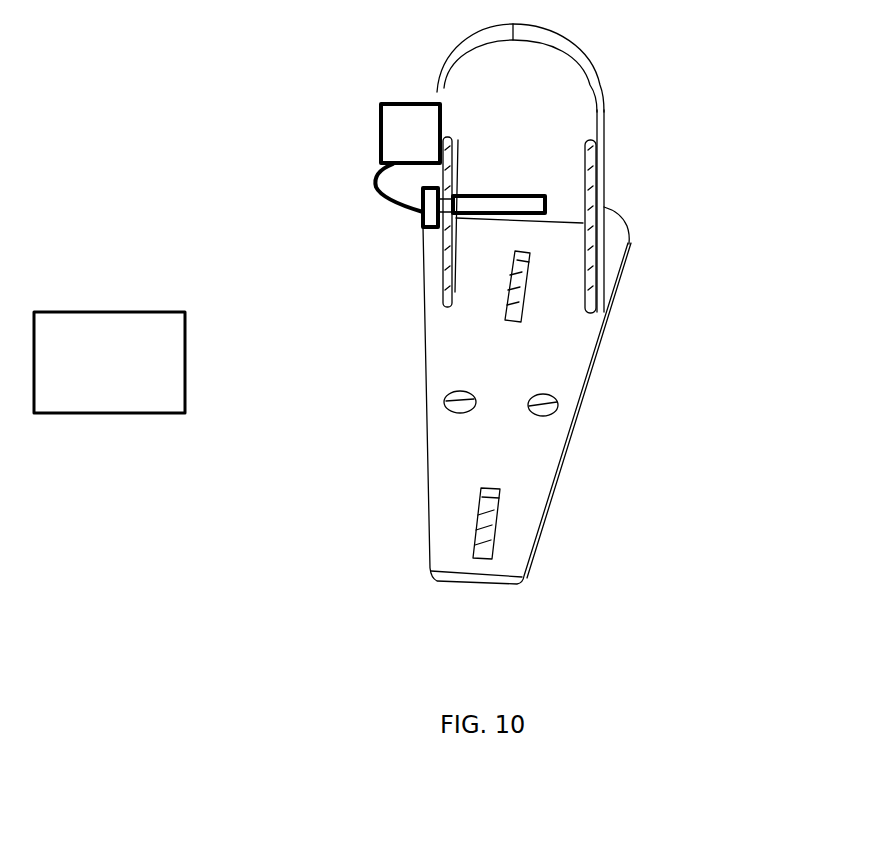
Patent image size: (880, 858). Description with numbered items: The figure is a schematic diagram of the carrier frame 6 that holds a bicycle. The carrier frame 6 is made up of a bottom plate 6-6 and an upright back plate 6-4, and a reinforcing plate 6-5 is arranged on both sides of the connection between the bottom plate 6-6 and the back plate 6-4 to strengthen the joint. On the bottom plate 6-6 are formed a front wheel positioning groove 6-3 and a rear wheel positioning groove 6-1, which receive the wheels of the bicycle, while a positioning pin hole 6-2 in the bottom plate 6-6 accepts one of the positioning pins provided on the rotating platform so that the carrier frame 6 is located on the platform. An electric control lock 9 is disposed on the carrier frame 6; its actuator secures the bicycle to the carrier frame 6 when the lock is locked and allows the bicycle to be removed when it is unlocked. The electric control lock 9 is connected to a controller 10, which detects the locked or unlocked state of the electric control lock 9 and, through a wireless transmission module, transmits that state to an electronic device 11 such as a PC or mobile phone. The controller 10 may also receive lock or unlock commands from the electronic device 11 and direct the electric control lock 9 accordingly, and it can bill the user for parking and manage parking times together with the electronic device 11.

The carrier frame 6 is at (212, 84).
The rear wheel positioning groove 6-1 is at (500, 493).
The positioning pin hole 6-2 is at (548, 403).
The front wheel positioning groove 6-3 is at (528, 256).
The back plate 6-4 is at (573, 42).
The reinforcing plate 6-5 is at (423, 190).
The bottom plate 6-6 is at (452, 357).
The electric control lock 9 is at (500, 194).
The controller 10 is at (381, 120).
The electronic device 11 is at (120, 374).